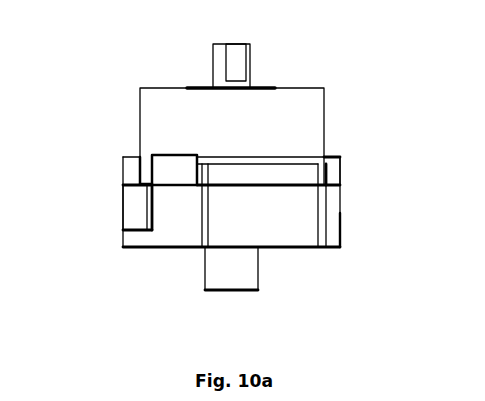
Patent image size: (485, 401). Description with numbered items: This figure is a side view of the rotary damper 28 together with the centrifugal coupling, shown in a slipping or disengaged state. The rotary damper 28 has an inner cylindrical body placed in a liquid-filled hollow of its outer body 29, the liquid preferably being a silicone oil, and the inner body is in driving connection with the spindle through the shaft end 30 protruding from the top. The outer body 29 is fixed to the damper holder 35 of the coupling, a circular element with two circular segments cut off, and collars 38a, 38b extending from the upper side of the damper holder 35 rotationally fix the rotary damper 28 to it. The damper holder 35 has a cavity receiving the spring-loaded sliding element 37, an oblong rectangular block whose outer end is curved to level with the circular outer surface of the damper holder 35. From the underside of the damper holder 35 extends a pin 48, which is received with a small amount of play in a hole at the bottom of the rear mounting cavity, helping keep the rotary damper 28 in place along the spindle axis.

The rotary damper 28 is at (236, 170).
The outer body 29 is at (155, 113).
The shaft end 30 is at (223, 62).
The damper holder 35 is at (356, 225).
The sliding element 37 is at (133, 211).
The collar 38a is at (342, 172).
The collar 38b is at (172, 173).
The pin 48 is at (237, 268).